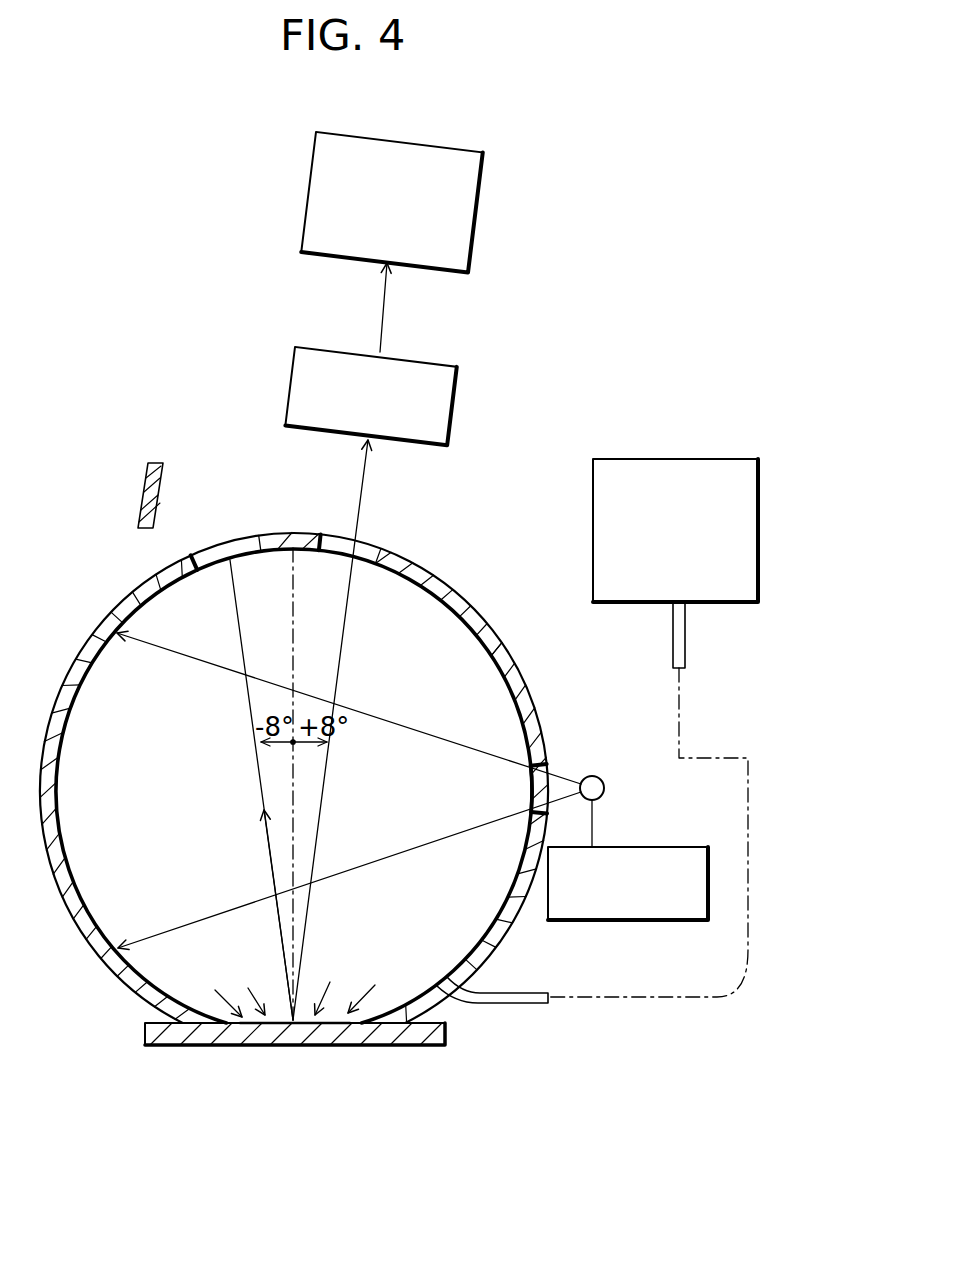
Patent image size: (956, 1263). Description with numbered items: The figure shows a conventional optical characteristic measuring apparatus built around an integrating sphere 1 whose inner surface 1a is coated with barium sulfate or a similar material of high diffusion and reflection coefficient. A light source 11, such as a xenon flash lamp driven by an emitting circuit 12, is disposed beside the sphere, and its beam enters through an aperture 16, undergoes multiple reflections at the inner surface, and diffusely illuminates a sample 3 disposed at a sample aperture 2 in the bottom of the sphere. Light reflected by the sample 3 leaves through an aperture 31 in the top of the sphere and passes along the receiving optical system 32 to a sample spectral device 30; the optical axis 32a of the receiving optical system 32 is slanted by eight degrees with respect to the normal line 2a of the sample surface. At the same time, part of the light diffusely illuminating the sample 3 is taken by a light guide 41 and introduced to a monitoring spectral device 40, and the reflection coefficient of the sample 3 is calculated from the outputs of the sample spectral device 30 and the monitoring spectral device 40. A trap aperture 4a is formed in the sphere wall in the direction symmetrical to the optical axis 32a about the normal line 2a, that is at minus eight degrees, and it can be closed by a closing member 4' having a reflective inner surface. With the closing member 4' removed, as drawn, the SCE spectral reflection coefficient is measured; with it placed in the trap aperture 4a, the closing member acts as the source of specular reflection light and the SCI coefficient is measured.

The integrating sphere 1 is at (470, 602).
The inner surface 1a is at (490, 650).
The sample aperture 2 is at (333, 1018).
The normal line 2a is at (300, 832).
The sample 3 is at (383, 1047).
The closing member 4' is at (173, 480).
The trap aperture 4a is at (212, 552).
The light source 11 is at (596, 776).
The emitting circuit 12 is at (610, 921).
The aperture 16 is at (540, 785).
The sample spectral device 30 is at (487, 166).
The aperture 31 is at (370, 552).
The receiving optical system 32 is at (460, 383).
The optical axis 32a is at (341, 668).
The monitoring spectral device 40 is at (707, 459).
The light guide 41 is at (685, 625).